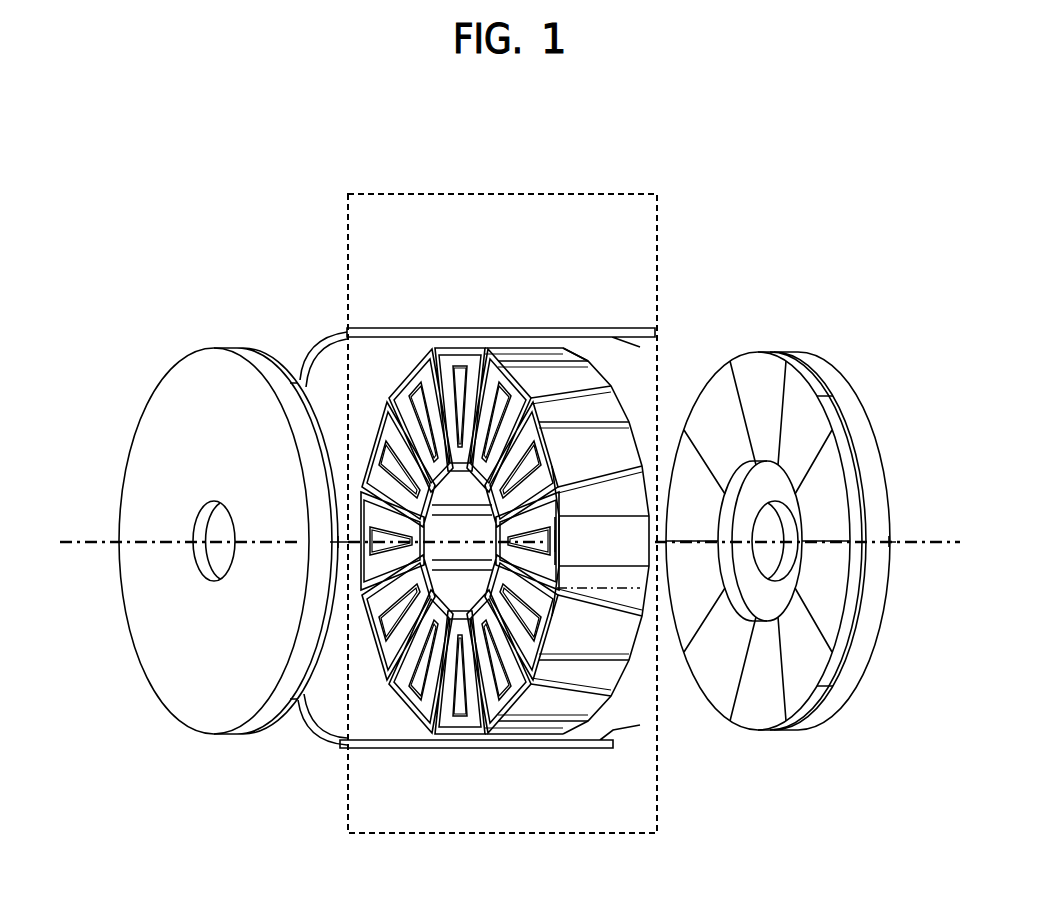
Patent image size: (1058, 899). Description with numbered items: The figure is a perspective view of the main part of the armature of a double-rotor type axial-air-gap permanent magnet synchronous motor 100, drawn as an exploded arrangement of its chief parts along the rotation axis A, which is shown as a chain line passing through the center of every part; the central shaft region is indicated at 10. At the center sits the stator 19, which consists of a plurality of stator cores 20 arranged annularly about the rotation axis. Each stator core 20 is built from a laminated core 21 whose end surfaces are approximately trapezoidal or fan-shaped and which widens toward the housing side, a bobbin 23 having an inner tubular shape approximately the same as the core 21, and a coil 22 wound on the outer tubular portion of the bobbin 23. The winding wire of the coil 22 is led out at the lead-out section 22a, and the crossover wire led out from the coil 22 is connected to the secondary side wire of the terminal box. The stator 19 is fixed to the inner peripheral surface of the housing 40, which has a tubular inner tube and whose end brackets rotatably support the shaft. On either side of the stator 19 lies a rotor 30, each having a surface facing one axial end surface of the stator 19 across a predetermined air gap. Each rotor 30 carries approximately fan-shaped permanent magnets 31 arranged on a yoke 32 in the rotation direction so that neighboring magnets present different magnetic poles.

The motor 100 is at (237, 310).
The shaft 10 is at (552, 541).
The stator 19 is at (389, 194).
The stator core 20 is at (555, 270).
The core 21 is at (492, 385).
The coil 22 is at (537, 365).
The lead-out section 22a is at (550, 623).
The bobbin 23 is at (567, 357).
The rotor 30 is at (812, 282).
The permanent magnet 31 is at (752, 372).
The yoke 32 is at (800, 370).
The housing 40 is at (340, 725).
The rotation axis A is at (502, 551).